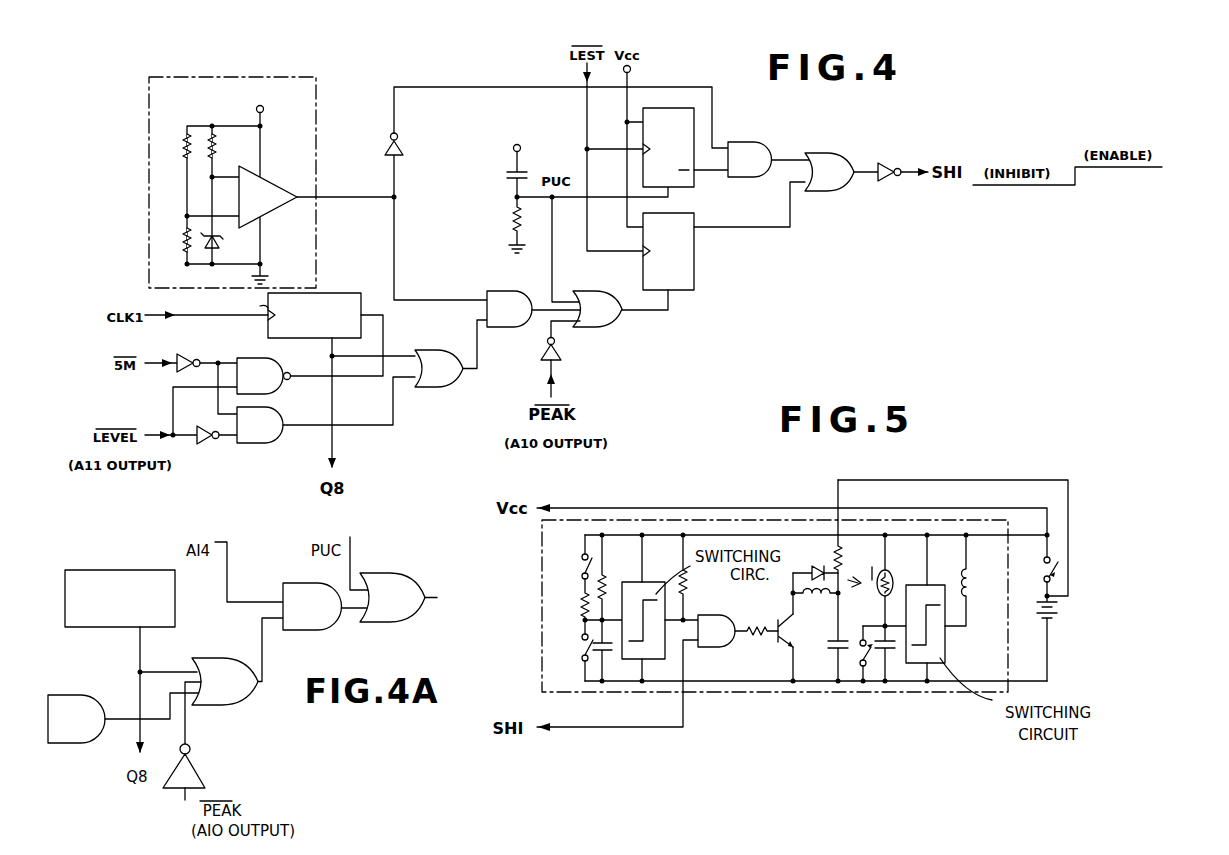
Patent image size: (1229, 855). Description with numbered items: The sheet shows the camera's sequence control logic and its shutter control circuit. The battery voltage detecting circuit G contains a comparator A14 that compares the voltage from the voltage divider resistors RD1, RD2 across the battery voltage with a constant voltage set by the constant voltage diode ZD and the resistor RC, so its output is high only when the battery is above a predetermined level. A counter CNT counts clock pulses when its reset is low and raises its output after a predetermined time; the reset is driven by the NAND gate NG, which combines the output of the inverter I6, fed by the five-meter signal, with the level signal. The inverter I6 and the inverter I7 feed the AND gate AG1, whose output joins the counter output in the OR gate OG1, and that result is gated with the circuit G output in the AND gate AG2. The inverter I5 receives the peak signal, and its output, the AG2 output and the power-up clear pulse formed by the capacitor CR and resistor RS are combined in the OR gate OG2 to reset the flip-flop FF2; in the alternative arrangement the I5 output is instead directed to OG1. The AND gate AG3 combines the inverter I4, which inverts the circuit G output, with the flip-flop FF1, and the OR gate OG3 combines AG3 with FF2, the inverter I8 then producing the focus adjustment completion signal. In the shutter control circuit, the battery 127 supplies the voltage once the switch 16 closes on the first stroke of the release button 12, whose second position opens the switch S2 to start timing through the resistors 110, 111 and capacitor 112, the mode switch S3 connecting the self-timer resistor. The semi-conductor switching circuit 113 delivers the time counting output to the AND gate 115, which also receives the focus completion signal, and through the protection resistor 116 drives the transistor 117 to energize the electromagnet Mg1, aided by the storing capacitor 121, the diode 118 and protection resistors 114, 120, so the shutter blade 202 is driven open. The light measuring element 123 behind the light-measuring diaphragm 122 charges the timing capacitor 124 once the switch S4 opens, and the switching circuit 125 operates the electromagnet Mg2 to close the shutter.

In FIG. 4, the battery voltage detecting circuit G is at (316, 100).
In FIG. 4, the comparator A14 is at (285, 210).
In FIG. 4, the voltage divider resistor RD1 is at (170, 146).
In FIG. 4, the voltage divider resistor RD2 is at (169, 240).
In FIG. 4, the resistor RC is at (223, 146).
In FIG. 4, the constant voltage diode ZD is at (221, 241).
In FIG. 4, the counter CNT is at (356, 293).
In FIG. 4A, the counter CNT is at (138, 577).
In FIG. 4, the inverter I4 is at (400, 150).
In FIG. 4, the inverter I5 is at (556, 352).
In FIG. 4A, the inverter I5 is at (196, 770).
In FIG. 4, the inverter I6 is at (187, 354).
In FIG. 4, the inverter I7 is at (205, 444).
In FIG. 4, the inverter I8 is at (896, 181).
In FIG. 4, the NAND gate NG is at (264, 376).
In FIG. 4, the AND gate AG1 is at (260, 425).
In FIG. 4A, the AND gate AG1 is at (76, 719).
In FIG. 4, the AND gate AG2 is at (509, 309).
In FIG. 4A, the AND gate AG2 is at (312, 606).
In FIG. 4, the AND gate AG3 is at (750, 159).
In FIG. 4, the OR gate OG1 is at (439, 368).
In FIG. 4A, the OR gate OG1 is at (225, 681).
In FIG. 4, the OR gate OG2 is at (597, 309).
In FIG. 4A, the OR gate OG2 is at (392, 597).
In FIG. 4, the OR gate OG3 is at (829, 172).
In FIG. 4, the D type flip-flop FF1 is at (694, 190).
In FIG. 4, the D type flip-flop FF2 is at (694, 280).
In FIG. 4, the capacitor CR is at (508, 158).
In FIG. 4, the resistor RS is at (525, 225).
In FIG. 5, the switch S2 is at (575, 650).
In FIG. 5, the mode switch S3 is at (575, 557).
In FIG. 5, the exposure time count start switch S4 is at (860, 668).
In FIG. 5, the resistor 110 is at (569, 599).
In FIG. 5, the resistor 111 is at (607, 588).
In FIG. 5, the capacitor 112 is at (609, 652).
In FIG. 5, the semi-conductor switching circuit 113 is at (658, 582).
In FIG. 5, the protection resistor 114 is at (698, 577).
In FIG. 5, the AND gate 115 is at (716, 631).
In FIG. 5, the protection resistor 116 is at (756, 621).
In FIG. 5, the transistor 117 is at (780, 627).
In FIG. 5, the diode 118 is at (813, 564).
In FIG. 5, the protection resistor 120 is at (852, 536).
In FIG. 5, the magnet actuation energy storing capacitor 121 is at (824, 637).
In FIG. 5, the light-measuring diaphragm 122 is at (870, 592).
In FIG. 5, the light measuring element 123 is at (896, 572).
In FIG. 5, the timing capacitor 124 is at (893, 655).
In FIG. 5, the semi-conductor switching circuit 125 is at (942, 590).
In FIG. 5, the battery 127 is at (1033, 638).
In FIG. 5, the electromagnet Mg1 is at (816, 606).
In FIG. 5, the electromagnet Mg2 is at (973, 580).
In FIG. 5, the switch 16 is at (1062, 568).
In FIG. 5, the shutter release button 12 is at (1054, 578).
In FIG. 5, the shutter blade 202 is at (868, 660).